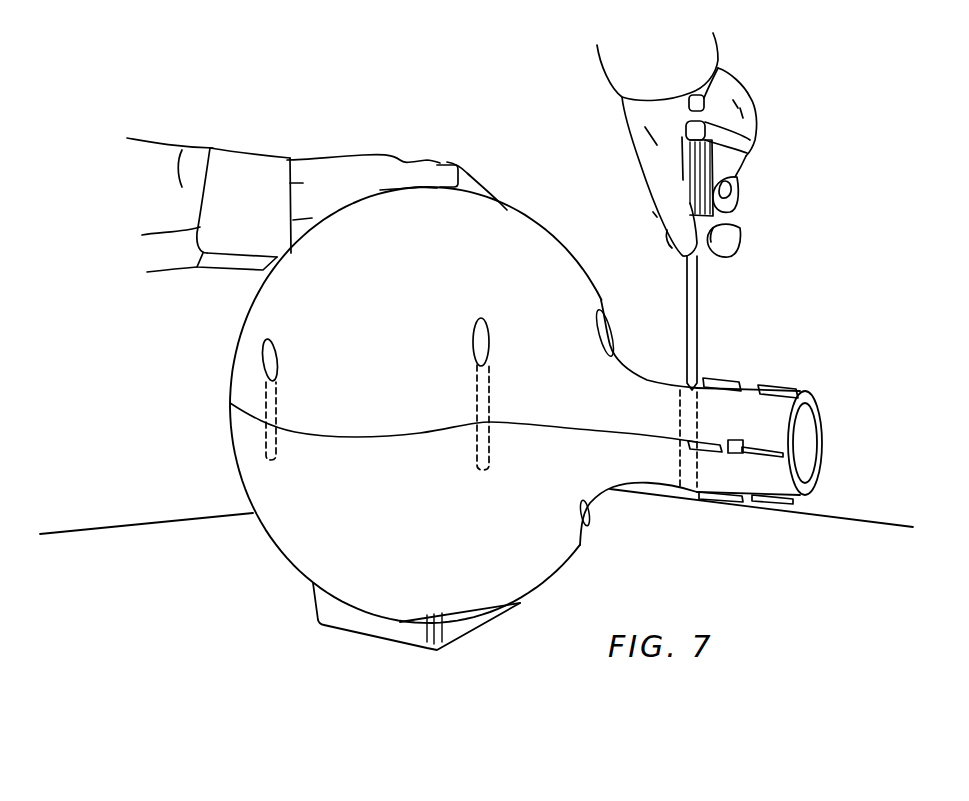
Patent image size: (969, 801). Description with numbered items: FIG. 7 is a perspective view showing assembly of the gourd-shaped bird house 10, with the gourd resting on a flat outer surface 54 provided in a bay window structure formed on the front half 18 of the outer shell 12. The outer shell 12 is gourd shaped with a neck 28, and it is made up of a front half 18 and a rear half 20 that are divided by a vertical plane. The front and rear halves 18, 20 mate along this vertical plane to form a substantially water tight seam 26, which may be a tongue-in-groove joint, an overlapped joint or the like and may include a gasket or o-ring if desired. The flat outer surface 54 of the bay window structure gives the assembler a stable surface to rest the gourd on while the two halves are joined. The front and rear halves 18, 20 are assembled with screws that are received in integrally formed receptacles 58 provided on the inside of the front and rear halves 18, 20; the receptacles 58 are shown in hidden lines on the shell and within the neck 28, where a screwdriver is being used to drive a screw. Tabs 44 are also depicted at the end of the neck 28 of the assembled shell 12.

The electroplating apparatus 10 is at (538, 176).
The outer shell 12 is at (563, 249).
The front half 18 is at (282, 558).
The rear half 20 is at (238, 328).
The seam 26 is at (612, 437).
The neck 28 is at (644, 375).
The locking tabs 44 is at (733, 376).
The outer surface 54 is at (370, 637).
The receptacles 58 is at (278, 398).